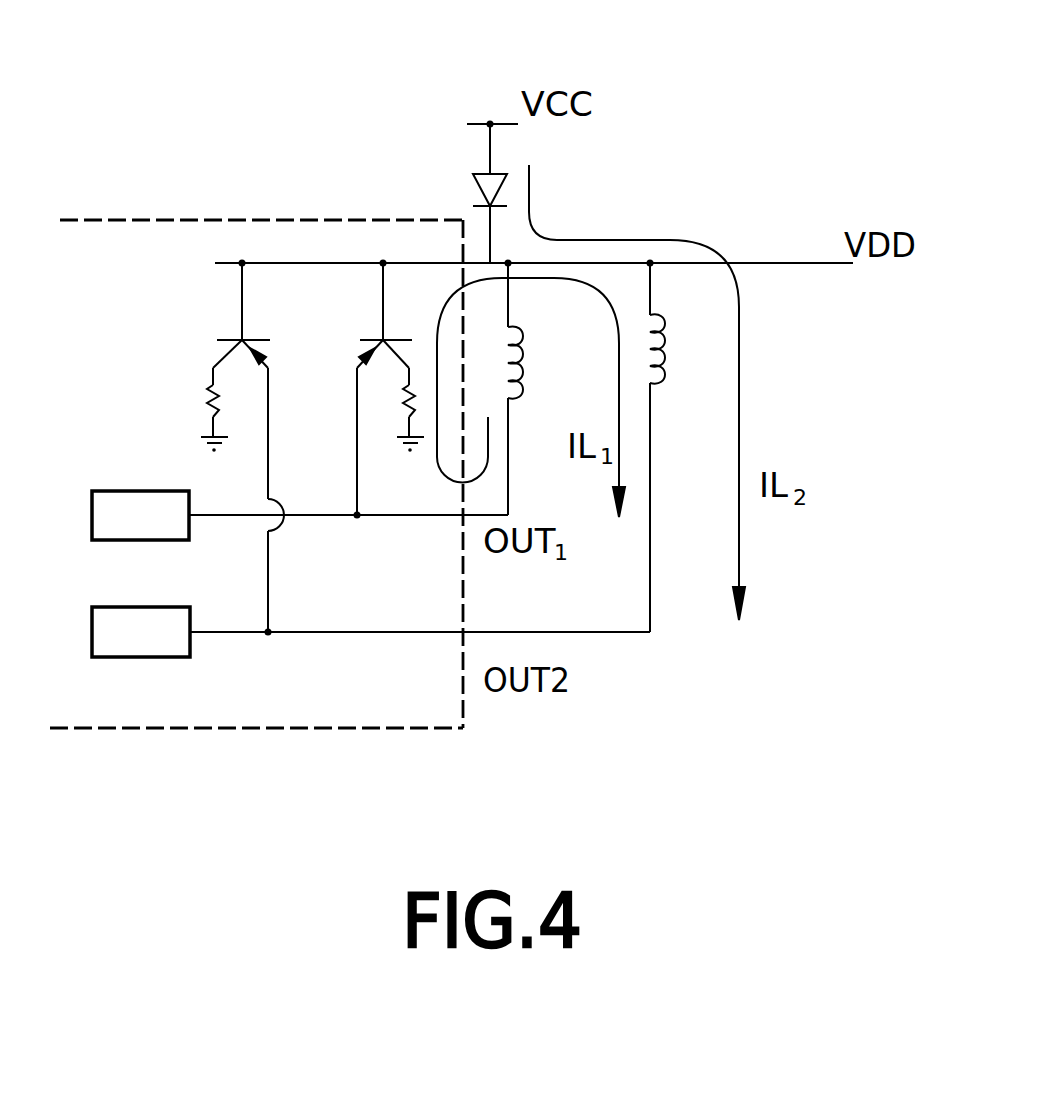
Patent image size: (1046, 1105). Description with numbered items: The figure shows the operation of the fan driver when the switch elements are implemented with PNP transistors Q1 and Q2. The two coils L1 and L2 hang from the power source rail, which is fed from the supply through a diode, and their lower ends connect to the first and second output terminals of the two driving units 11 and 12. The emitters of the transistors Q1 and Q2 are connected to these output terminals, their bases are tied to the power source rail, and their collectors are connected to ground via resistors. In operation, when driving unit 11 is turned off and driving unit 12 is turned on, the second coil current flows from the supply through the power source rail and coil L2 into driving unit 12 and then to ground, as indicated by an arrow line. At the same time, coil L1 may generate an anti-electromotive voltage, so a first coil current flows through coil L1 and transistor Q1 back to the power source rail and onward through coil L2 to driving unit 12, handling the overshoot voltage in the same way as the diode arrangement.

The driving unit 11 is at (140, 515).
The driving unit 12 is at (141, 632).
The PNP transistor Q1 is at (390, 389).
The PNP transistor Q2 is at (242, 447).
The coil L1 is at (539, 389).
The coil L2 is at (679, 447).